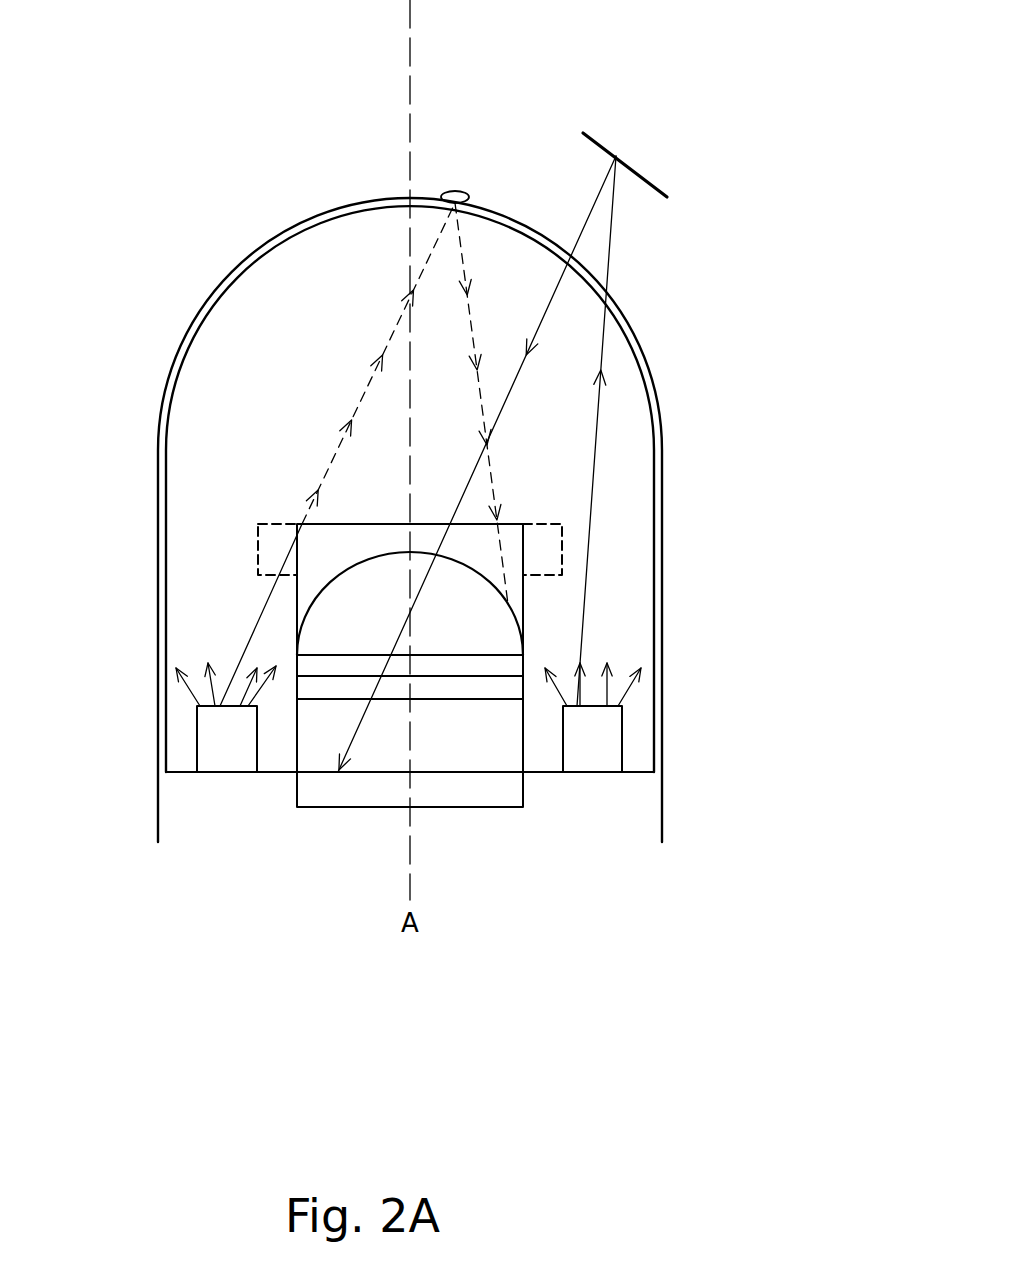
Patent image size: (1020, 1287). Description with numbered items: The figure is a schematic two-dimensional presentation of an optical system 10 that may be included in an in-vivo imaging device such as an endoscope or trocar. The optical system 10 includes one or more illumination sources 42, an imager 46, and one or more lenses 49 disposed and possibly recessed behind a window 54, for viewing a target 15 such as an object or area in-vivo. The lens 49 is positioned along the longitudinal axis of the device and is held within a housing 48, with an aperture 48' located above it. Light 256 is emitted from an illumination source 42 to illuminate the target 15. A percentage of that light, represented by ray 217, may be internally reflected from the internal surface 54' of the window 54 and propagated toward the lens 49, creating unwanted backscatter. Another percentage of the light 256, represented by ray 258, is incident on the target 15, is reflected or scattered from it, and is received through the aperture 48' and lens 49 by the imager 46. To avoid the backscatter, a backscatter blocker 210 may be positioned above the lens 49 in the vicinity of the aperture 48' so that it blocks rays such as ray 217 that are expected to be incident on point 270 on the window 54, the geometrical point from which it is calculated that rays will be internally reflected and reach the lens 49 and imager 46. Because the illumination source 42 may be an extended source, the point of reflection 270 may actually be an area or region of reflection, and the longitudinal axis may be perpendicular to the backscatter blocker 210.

The optical system 10 is at (193, 173).
The target 15 is at (616, 156).
The illumination source 42 is at (228, 775).
The imager 46 is at (336, 808).
The lens housing 48 is at (364, 648).
The aperture 48' is at (410, 508).
The lens 49 is at (361, 586).
The window 54 is at (462, 520).
The internal surface 54' is at (410, 489).
The backscatter blocker 210 is at (270, 522).
The ray 217 is at (366, 398).
The light 256 is at (197, 614).
The ray 258 is at (592, 462).
The point of reflection 270 is at (470, 190).